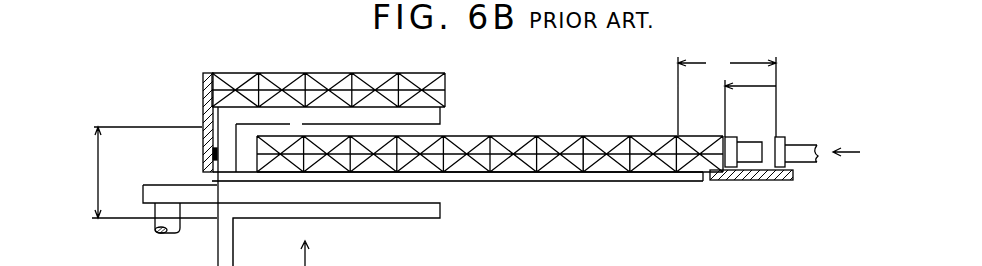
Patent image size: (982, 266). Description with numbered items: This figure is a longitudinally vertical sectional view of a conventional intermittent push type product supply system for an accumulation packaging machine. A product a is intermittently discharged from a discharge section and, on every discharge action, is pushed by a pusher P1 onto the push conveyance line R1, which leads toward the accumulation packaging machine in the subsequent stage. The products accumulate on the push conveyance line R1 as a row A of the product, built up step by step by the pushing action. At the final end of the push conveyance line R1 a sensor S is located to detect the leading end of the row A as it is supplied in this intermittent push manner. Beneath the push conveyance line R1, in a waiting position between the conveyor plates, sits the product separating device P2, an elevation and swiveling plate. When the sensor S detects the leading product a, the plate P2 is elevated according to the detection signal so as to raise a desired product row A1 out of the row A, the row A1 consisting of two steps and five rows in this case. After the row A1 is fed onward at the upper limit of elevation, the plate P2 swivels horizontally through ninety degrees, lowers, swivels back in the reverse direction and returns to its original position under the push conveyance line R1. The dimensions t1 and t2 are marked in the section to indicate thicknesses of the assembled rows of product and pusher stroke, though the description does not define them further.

The product row A1 is at (325, 78).
The row of the product A is at (470, 127).
The product a is at (607, 142).
The sensor S is at (213, 153).
The push conveyance line R1 is at (668, 178).
The pusher P1 is at (806, 158).
The product separating device (elevation and swiveling plate) P2 is at (177, 198).
The thickness t1 is at (153, 172).
The thickness t2 is at (727, 96).